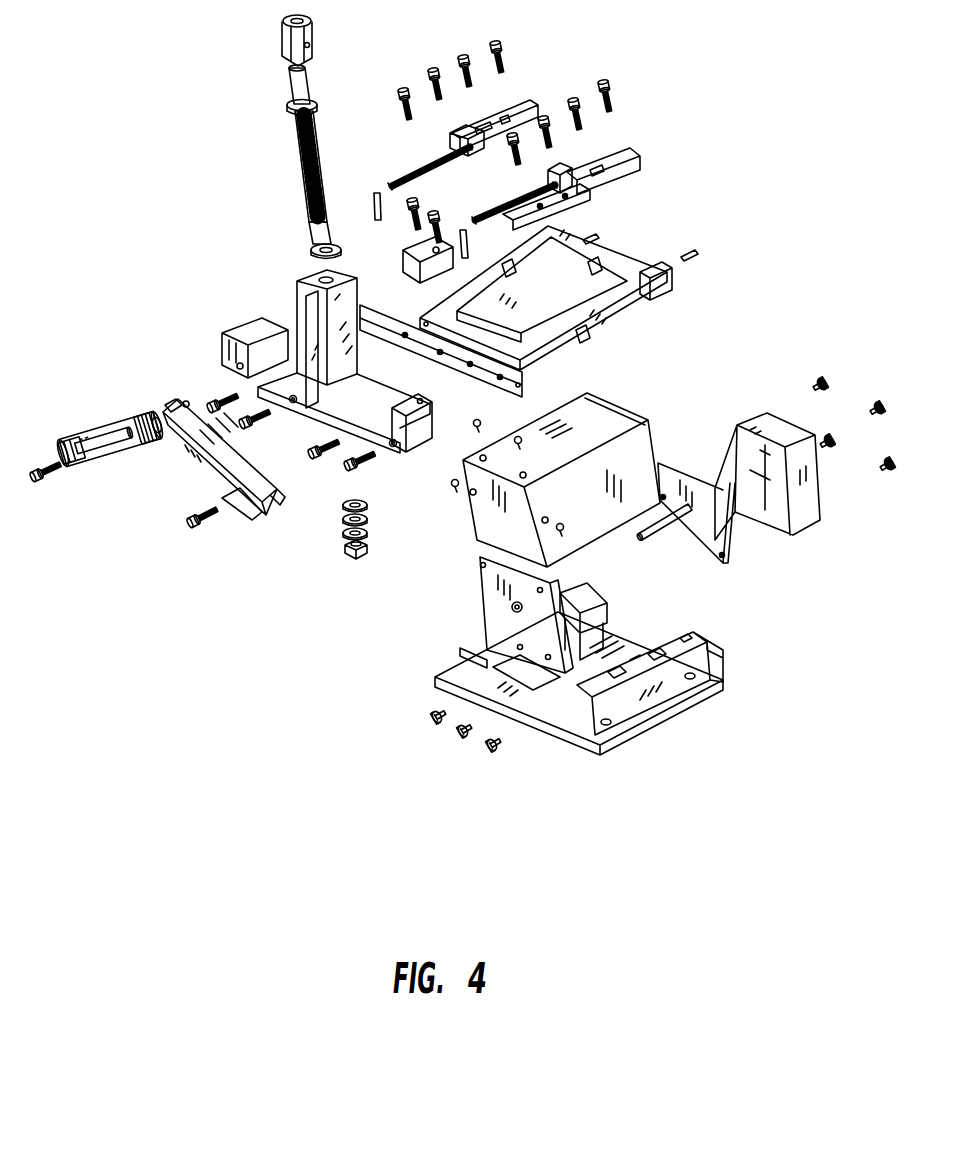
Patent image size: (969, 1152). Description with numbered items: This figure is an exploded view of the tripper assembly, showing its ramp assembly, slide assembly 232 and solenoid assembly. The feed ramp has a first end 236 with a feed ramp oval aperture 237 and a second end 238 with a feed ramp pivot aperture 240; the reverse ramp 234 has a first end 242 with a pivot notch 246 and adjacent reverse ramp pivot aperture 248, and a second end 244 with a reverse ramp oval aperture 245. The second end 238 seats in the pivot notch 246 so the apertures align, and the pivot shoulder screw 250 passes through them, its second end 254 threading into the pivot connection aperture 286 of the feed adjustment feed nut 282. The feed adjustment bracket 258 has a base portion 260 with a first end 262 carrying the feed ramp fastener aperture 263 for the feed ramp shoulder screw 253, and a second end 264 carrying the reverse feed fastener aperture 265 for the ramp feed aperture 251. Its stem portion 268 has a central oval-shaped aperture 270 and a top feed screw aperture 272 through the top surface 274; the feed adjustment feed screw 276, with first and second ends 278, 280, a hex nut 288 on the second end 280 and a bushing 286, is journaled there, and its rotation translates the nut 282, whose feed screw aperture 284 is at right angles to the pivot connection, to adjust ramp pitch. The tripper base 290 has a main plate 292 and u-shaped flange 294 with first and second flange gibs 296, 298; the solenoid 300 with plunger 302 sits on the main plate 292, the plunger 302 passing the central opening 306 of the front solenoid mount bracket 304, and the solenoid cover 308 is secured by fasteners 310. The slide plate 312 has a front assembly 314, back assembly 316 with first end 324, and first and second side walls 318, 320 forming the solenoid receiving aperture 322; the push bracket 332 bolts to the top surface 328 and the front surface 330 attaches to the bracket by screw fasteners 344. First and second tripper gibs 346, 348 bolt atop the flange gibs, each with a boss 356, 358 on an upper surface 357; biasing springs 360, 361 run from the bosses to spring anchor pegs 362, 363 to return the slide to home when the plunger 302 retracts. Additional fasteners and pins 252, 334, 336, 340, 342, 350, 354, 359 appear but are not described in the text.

The slide assembly 232 is at (99, 475).
The reverse ramp 234 is at (228, 520).
The first end 236 is at (103, 439).
The feed ramp oval aperture 237 is at (71, 450).
The second end 238 is at (149, 427).
The feed ramp pivot aperture 240 is at (147, 440).
The first end 242 is at (178, 404).
The second end 244 is at (270, 492).
The reverse ramp oval aperture 245 is at (252, 514).
The pivot notch 246 is at (168, 410).
The reverse ramp pivot aperture 248 is at (170, 405).
The pivot shoulder screw 250 is at (117, 466).
The ramp feed aperture 251 is at (199, 531).
The collar 252 is at (110, 470).
The feed ramp shoulder screw 253 is at (54, 480).
The second end 254 is at (133, 450).
The feed adjustment bracket 258 is at (304, 346).
The base portion 260 is at (338, 462).
The first end 262 is at (248, 340).
The feed ramp fastener aperture 263 is at (248, 354).
The second end 264 is at (420, 402).
The reverse feed fastener aperture 265 is at (412, 430).
The stem portion 268 is at (362, 372).
The central oval-shaped aperture 270 is at (300, 326).
The top feed screw aperture 272 is at (310, 276).
The top surface 274 is at (344, 278).
The feed adjustment feed screw 276 is at (314, 170).
The first end 278 is at (330, 242).
The second end 280 is at (296, 80).
The feed adjustment feed nut 282 is at (294, 322).
The feed screw aperture 284 is at (306, 328).
The pivot connection aperture 286 is at (312, 252).
The hex nut 288 is at (290, 36).
The tripper base 290 is at (612, 687).
The main plate 292 is at (625, 636).
The u-shaped flange 294 is at (548, 715).
The first flange gib 296 is at (703, 634).
The second flange gib 298 is at (590, 588).
The solenoid 300 is at (712, 448).
The plunger 302 is at (663, 540).
The front solenoid mount bracket 304 is at (493, 594).
The central opening 306 is at (512, 608).
The solenoid cover 308 is at (592, 420).
The fasteners 310 is at (480, 422).
The slide plate 312 is at (398, 314).
The front assembly 314 is at (446, 352).
The back assembly 316 is at (640, 262).
The first side wall 318 is at (626, 300).
The second side wall 320 is at (543, 254).
The solenoid receiving aperture 322 is at (593, 266).
The first end 324 is at (658, 294).
The top surface 328 is at (452, 314).
The front surface 330 is at (362, 352).
The push bracket 332 is at (410, 250).
The screw 334 is at (443, 242).
The screw 336 is at (420, 204).
The screw 340 is at (293, 404).
The hole 342 is at (426, 322).
The screw fasteners 344 is at (228, 400).
The first tripper gib 346 is at (638, 168).
The second tripper gib 348 is at (520, 110).
The bar 350 is at (557, 194).
The screw 354 is at (606, 92).
The boss 356 is at (551, 165).
The upper surface 357 is at (594, 158).
The boss 358 is at (454, 134).
The slot 359 is at (497, 112).
The biasing spring 360 is at (496, 192).
The biasing spring 361 is at (418, 166).
The spring anchor peg 362 is at (372, 200).
The spring anchor peg 363 is at (463, 243).